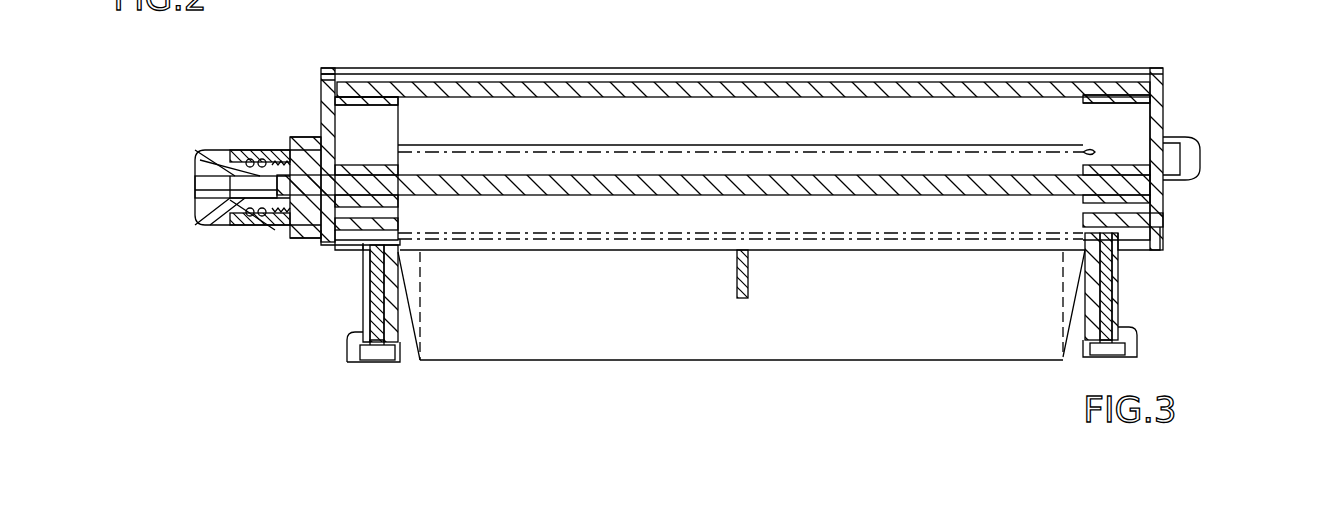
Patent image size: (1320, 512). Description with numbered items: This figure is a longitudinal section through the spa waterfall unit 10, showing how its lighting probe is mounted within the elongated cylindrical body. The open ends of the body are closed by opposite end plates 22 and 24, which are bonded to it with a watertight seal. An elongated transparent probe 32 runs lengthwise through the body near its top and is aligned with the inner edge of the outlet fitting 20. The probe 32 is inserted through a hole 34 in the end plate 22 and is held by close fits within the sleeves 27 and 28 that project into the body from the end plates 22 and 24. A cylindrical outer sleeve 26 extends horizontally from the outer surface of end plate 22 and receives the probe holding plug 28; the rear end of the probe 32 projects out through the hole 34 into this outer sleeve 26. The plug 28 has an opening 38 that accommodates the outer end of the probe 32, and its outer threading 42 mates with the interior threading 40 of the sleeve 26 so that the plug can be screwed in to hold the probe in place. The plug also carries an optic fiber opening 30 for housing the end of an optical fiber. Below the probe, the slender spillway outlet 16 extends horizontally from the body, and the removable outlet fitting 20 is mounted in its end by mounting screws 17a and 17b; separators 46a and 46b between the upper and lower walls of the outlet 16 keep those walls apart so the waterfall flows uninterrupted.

The waterfall unit 10 is at (1241, 16).
The spillway outlet 16 is at (777, 340).
The mounting screw 17a is at (363, 315).
The mounting screw 17b is at (1093, 277).
The outlet fitting 20 is at (408, 355).
The end plate 22 is at (323, 95).
The end plate 24 is at (1163, 117).
The outer sleeve 26 is at (254, 232).
The sleeve 27 is at (363, 198).
The probe holding plug 28 is at (215, 228).
The optic fiber opening 30 is at (197, 180).
The transparent probe 32 is at (920, 172).
The hole 34 is at (398, 165).
The opening 38 is at (306, 178).
The interior threading 40 is at (285, 236).
The outer threading 42 is at (258, 160).
The separator 46a is at (385, 360).
The separator 46b is at (1115, 362).